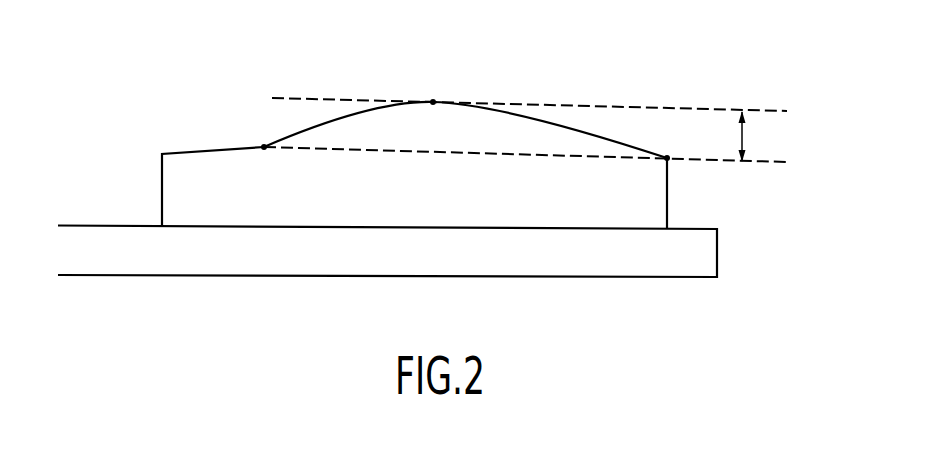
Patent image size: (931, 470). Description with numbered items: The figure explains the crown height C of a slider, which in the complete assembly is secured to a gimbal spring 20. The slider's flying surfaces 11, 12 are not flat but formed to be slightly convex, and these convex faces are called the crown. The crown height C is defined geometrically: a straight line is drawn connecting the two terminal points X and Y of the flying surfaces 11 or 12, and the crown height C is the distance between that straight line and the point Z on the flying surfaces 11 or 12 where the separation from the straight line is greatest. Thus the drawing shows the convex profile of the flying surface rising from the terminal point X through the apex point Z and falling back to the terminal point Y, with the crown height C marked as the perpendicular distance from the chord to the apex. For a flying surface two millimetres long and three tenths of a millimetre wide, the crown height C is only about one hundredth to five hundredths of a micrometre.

The flying surface 11 is at (474, 116).
The flying surface 12 is at (575, 126).
The gimbal spring 20 is at (703, 253).
The terminal point X is at (256, 132).
The terminal point Y is at (680, 158).
The point of greatest distance Z is at (433, 102).
The crown height C is at (757, 136).